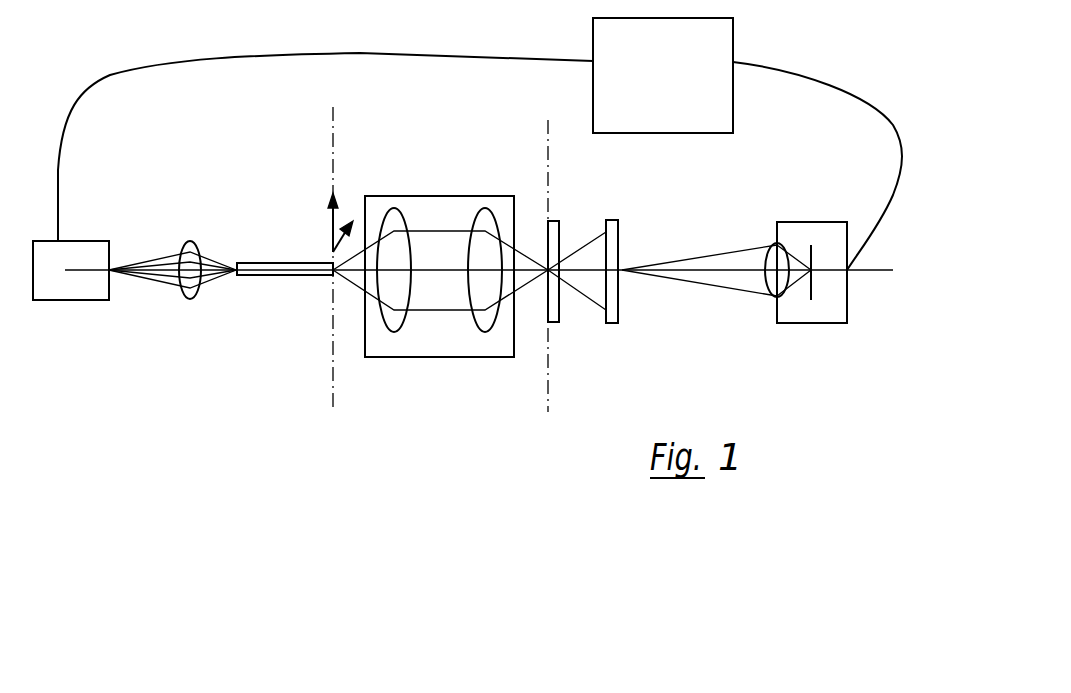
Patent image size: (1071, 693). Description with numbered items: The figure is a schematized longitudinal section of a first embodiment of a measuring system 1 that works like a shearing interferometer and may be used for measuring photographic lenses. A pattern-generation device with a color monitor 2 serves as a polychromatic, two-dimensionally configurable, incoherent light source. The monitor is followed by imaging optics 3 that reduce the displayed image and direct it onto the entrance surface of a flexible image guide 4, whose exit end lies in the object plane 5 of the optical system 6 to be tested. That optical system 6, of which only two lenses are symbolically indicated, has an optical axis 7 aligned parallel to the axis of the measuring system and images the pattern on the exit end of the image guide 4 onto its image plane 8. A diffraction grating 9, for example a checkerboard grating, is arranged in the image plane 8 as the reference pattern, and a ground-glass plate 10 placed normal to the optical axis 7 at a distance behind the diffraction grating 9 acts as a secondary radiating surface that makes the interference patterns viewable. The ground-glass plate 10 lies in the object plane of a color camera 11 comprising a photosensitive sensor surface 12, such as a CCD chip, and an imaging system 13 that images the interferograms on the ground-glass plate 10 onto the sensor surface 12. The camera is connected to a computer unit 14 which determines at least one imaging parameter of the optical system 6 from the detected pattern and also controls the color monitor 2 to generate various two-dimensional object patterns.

The measuring system 1 is at (179, 410).
The color monitor 2 is at (52, 300).
The imaging optics 3 is at (190, 298).
The image guide 4 is at (278, 275).
The object plane 5 is at (333, 403).
The optical system to be tested 6 is at (438, 357).
The optical axis 7 is at (885, 275).
The image plane 8 is at (548, 398).
The diffraction grating 9 is at (557, 322).
The ground-glass plate 10 is at (616, 323).
The color camera 11 is at (815, 323).
The photosensitive sensor surface 12 is at (811, 292).
The imaging system 13 is at (774, 286).
The computer unit 14 is at (727, 117).